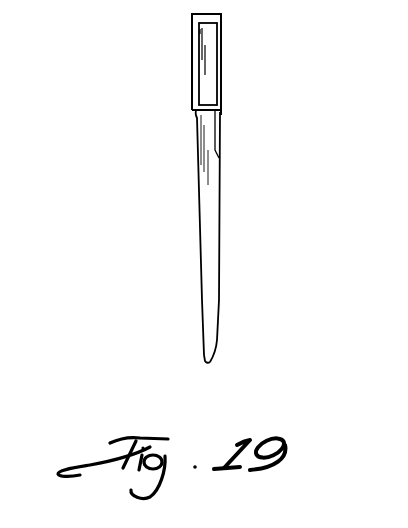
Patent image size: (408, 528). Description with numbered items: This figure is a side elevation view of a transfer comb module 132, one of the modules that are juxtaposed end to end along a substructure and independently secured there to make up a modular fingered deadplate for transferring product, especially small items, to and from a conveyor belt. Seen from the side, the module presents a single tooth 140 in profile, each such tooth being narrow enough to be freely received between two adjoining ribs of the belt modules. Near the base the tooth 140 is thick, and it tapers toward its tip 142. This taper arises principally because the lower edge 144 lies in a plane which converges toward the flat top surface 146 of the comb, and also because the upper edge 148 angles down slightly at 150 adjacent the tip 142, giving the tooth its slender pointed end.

The transfer comb module 132 is at (171, 58).
The flat top surface 146 is at (223, 111).
The tooth 140 is at (203, 244).
The lower edge 144 is at (204, 306).
The upper edge 148 is at (220, 267).
The downward angle 150 is at (218, 348).
The tip 142 is at (206, 365).